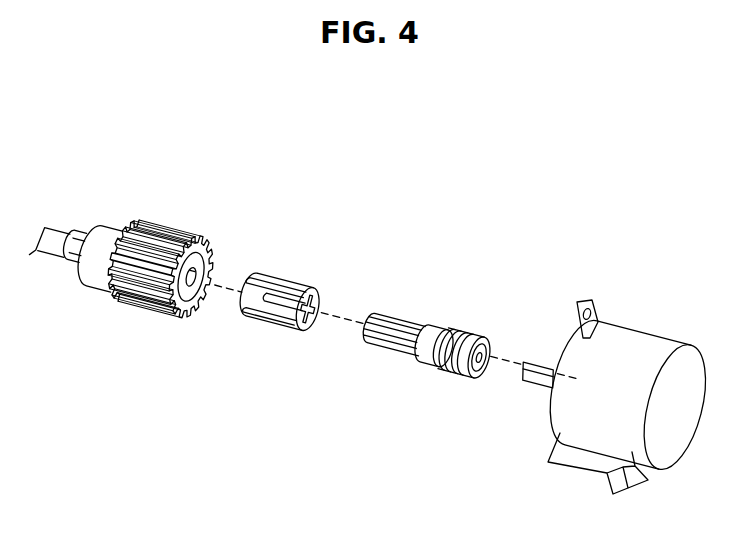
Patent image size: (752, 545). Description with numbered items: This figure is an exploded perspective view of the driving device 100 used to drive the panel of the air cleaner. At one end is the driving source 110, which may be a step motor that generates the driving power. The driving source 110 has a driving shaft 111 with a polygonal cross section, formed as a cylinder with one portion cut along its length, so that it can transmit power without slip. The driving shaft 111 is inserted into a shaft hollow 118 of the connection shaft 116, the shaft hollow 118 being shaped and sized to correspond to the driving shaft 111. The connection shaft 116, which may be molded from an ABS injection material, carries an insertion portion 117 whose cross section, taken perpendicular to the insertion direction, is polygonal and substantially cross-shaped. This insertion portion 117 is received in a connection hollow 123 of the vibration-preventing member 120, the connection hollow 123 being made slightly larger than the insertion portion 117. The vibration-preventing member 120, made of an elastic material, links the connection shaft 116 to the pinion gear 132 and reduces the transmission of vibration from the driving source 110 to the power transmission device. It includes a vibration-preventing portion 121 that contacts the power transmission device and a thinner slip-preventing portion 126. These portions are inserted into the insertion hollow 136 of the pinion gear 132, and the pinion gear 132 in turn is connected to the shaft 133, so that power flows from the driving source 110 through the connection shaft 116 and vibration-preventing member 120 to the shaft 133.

The driving device 100 is at (448, 180).
The driving source 110 is at (633, 335).
The driving shaft 111 is at (542, 367).
The connection shaft 116 is at (437, 330).
The insertion portion 117 is at (392, 325).
The shaft hollow 118 is at (488, 350).
The vibration-preventing member 120 is at (301, 265).
The vibration-preventing portion 121 is at (295, 312).
The connection hollow 123 is at (317, 334).
The slip-preventing portion 126 is at (262, 290).
The pinion gear 132 is at (120, 233).
The shaft 133 is at (62, 235).
The insertion hollow 136 is at (193, 314).